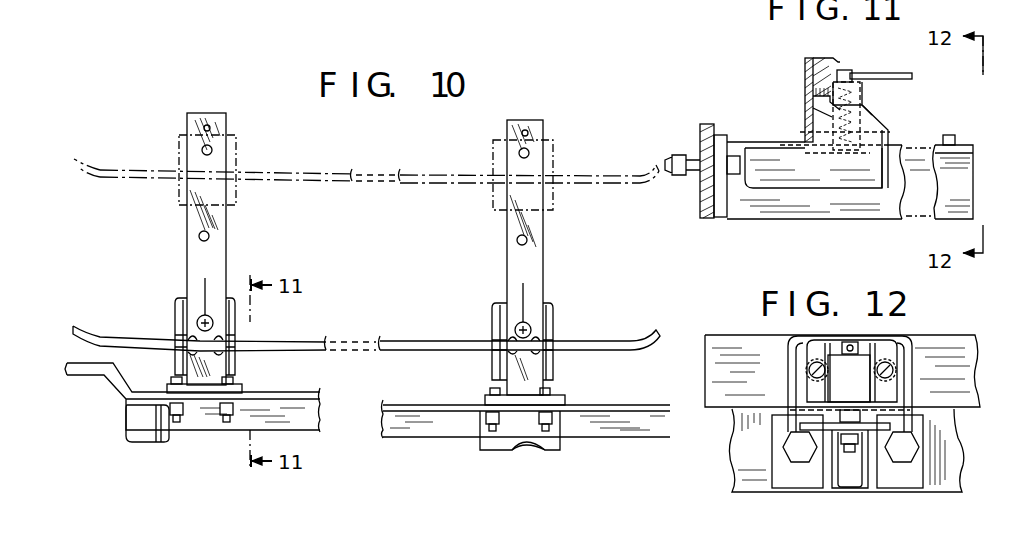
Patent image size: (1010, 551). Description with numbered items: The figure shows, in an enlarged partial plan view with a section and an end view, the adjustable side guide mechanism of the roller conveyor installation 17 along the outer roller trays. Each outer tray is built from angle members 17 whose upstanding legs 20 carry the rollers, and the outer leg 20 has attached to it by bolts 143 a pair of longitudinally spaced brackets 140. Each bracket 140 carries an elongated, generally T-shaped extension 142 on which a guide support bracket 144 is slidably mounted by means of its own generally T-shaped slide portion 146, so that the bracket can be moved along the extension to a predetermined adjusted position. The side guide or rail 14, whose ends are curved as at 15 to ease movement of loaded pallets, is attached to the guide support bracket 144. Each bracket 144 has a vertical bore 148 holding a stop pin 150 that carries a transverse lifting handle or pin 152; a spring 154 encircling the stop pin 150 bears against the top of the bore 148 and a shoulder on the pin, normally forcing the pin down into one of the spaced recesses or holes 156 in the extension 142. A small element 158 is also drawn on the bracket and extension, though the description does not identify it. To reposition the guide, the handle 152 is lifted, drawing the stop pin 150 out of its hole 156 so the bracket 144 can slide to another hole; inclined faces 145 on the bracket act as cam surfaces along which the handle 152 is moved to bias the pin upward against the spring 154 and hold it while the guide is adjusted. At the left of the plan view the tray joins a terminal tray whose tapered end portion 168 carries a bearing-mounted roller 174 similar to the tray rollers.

In FIG. 10, the side guide or rail 14 is at (426, 175).
In FIG. 11, the side guide or rail 14 is at (805, 72).
In FIG. 12, the side guide or rail 14 is at (736, 336).
In FIG. 10, the curved end 15 is at (648, 338).
In FIG. 10, the angle member 17 is at (660, 428).
In FIG. 10, the upstanding leg 20 is at (630, 405).
In FIG. 11, the upstanding leg 20 is at (700, 137).
In FIG. 12, the upstanding leg 20 is at (740, 438).
In FIG. 10, the bracket 140 is at (562, 400).
In FIG. 11, the bracket 140 is at (722, 140).
In FIG. 10, the T-shaped extension 142 is at (228, 252).
In FIG. 10, the bolt 143 is at (560, 444).
In FIG. 11, the bolt 143 is at (688, 178).
In FIG. 10, the guide support bracket 144 is at (178, 160).
In FIG. 11, the guide support bracket 144 is at (889, 132).
In FIG. 12, the guide support bracket 144 is at (912, 395).
In FIG. 11, the inclined face 145 is at (880, 122).
In FIG. 12, the T-shaped slide portion 146 is at (810, 428).
In FIG. 11, the vertical bore 148 is at (864, 104).
In FIG. 11, the stop pin 150 is at (822, 172).
In FIG. 10, the lifting handle or pin 152 is at (201, 285).
In FIG. 11, the lifting handle or pin 152 is at (900, 76).
In FIG. 12, the lifting handle or pin 152 is at (840, 349).
In FIG. 11, the spring 154 is at (813, 132).
In FIG. 10, the recess or hole 156 is at (199, 237).
In FIG. 10, the stop 158 is at (211, 129).
In FIG. 11, the stop 158 is at (951, 135).
In FIG. 12, the stop 158 is at (838, 410).
In FIG. 10, the end portion 168 is at (258, 392).
In FIG. 10, the roller 174 is at (170, 436).